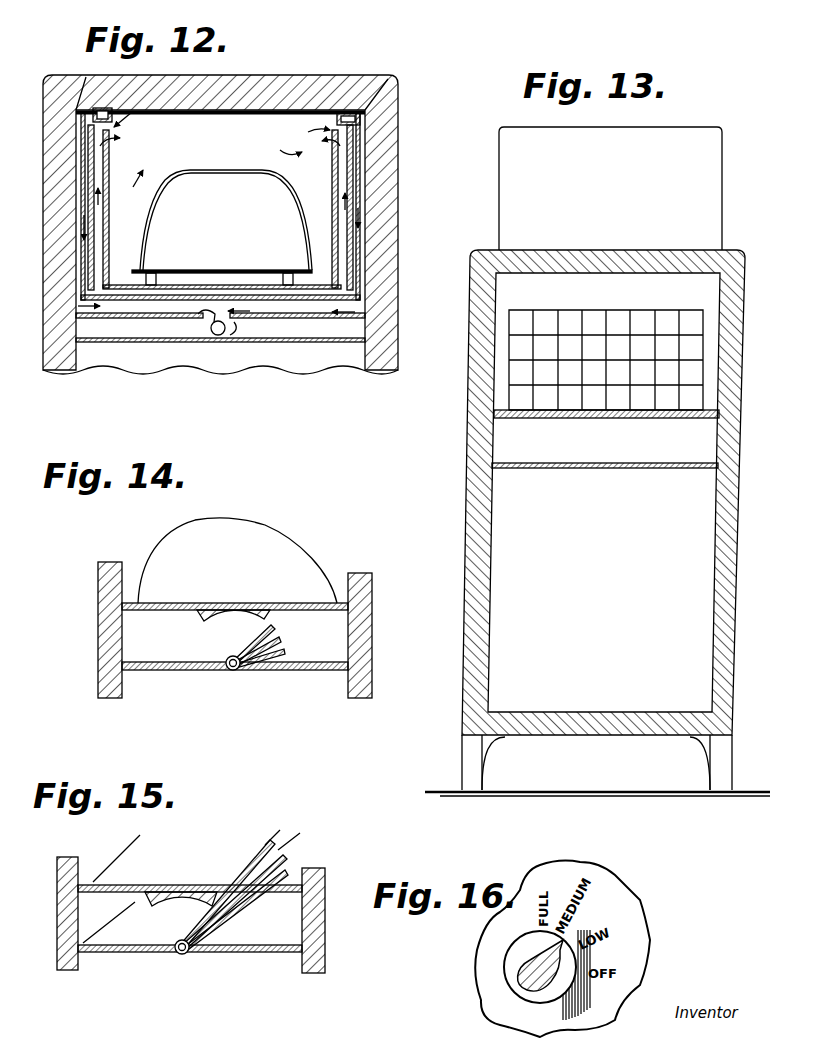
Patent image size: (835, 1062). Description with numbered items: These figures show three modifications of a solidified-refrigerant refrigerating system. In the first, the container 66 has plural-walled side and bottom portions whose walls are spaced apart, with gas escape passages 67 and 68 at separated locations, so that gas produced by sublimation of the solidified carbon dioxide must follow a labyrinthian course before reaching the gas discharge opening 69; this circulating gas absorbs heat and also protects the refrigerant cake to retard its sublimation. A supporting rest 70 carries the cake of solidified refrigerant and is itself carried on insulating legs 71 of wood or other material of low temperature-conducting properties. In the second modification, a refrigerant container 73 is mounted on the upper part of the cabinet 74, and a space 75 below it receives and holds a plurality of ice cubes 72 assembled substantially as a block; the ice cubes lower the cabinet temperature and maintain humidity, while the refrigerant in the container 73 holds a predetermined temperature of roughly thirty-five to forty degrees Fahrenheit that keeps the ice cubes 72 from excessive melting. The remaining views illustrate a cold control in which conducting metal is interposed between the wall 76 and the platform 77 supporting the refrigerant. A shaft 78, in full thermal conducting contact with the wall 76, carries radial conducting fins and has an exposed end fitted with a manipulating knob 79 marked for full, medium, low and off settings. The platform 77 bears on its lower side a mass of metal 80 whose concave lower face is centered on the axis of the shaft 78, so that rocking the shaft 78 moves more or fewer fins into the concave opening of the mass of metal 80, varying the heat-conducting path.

In FIG. 12, the container 66 is at (333, 168).
In FIG. 12, the gas escape passage 67 is at (118, 141).
In FIG. 12, the gas escape passage 68 is at (92, 120).
In FIG. 12, the gas discharge opening 69 is at (212, 325).
In FIG. 12, the supporting rest 70 is at (249, 270).
In FIG. 12, the insulating legs 71 is at (152, 271).
In FIG. 13, the ice cubes 72 is at (692, 328).
In FIG. 13, the refrigerant container 73 is at (716, 195).
In FIG. 13, the cabinet 74 is at (730, 417).
In FIG. 13, the space 75 is at (714, 372).
In FIG. 14, the wall 76 is at (327, 673).
In FIG. 14, the platform 77 is at (156, 604).
In FIG. 14, the shaft 78 is at (228, 668).
In FIG. 14, the manipulating knob 79 is at (281, 640).
In FIG. 14, the mass of metal 80 is at (205, 622).